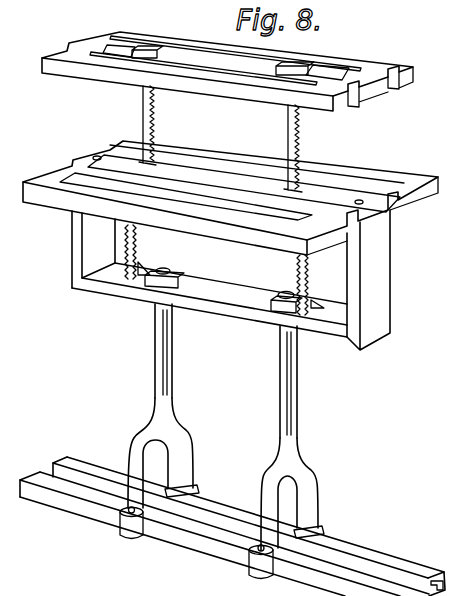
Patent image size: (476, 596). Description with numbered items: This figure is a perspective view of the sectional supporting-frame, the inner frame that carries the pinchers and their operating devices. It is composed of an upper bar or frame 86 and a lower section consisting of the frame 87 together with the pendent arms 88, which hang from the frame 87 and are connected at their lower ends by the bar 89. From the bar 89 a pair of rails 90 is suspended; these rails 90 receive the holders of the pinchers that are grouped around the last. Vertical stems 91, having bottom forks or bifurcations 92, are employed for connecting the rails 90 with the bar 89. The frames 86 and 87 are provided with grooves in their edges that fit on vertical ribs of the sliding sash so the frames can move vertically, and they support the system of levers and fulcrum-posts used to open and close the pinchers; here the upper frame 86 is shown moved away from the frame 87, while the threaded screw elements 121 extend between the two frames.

The upper bar or frame 86 is at (227, 71).
The frame 87 is at (230, 198).
The pendent arms 88 is at (231, 280).
The bar 89 is at (209, 300).
The rails 90 is at (232, 526).
The vertical stems 91 is at (238, 371).
The bottom forks or bifurcations 92 is at (229, 488).
The adjusting screws 121 is at (222, 84).